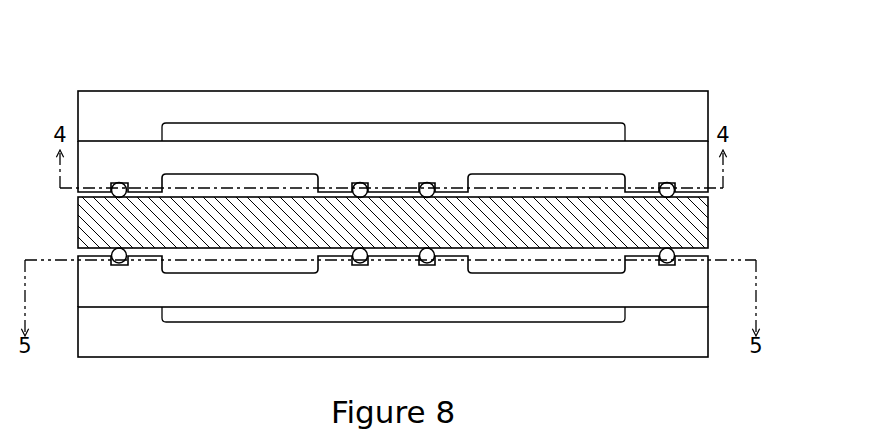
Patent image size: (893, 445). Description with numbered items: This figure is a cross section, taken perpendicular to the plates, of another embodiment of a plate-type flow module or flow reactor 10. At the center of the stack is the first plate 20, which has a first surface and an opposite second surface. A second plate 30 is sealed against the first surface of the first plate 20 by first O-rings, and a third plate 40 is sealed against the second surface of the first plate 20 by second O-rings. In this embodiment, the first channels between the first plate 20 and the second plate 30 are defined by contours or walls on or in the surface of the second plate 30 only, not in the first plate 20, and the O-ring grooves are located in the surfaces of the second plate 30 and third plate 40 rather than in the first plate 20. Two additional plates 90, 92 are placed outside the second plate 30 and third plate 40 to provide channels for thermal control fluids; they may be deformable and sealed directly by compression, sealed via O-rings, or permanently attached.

The plate-type flow module or flow reactor 10 is at (170, 387).
The first plate 20 is at (388, 222).
The second plate 30 is at (393, 166).
The third plate 40 is at (393, 281).
The additional plate 90 is at (393, 116).
The additional plate 92 is at (393, 332).